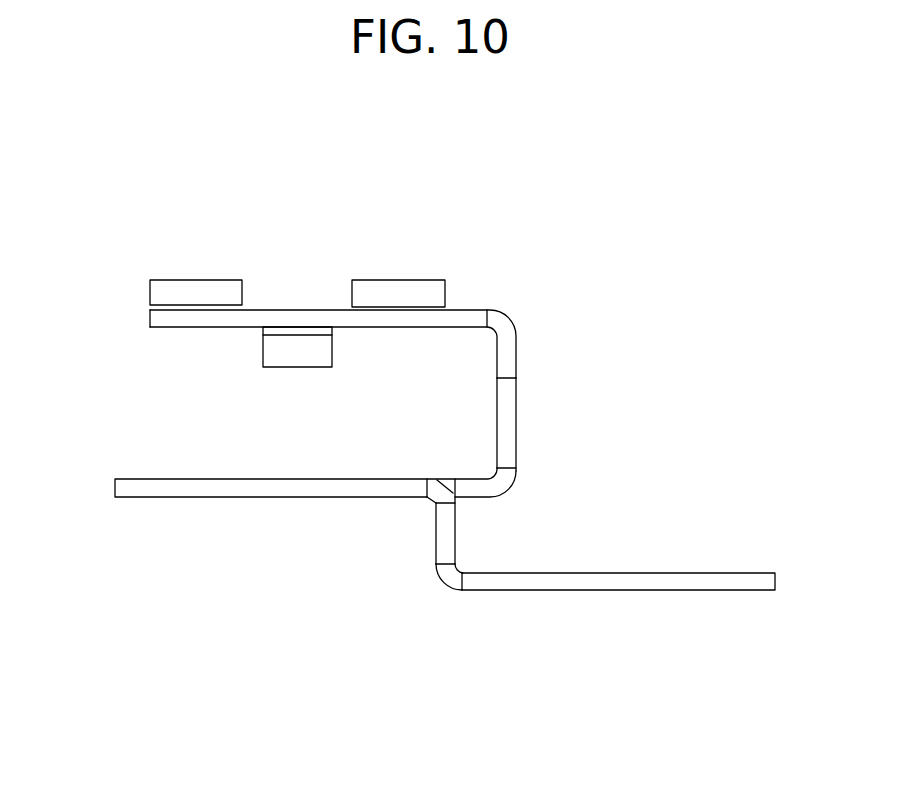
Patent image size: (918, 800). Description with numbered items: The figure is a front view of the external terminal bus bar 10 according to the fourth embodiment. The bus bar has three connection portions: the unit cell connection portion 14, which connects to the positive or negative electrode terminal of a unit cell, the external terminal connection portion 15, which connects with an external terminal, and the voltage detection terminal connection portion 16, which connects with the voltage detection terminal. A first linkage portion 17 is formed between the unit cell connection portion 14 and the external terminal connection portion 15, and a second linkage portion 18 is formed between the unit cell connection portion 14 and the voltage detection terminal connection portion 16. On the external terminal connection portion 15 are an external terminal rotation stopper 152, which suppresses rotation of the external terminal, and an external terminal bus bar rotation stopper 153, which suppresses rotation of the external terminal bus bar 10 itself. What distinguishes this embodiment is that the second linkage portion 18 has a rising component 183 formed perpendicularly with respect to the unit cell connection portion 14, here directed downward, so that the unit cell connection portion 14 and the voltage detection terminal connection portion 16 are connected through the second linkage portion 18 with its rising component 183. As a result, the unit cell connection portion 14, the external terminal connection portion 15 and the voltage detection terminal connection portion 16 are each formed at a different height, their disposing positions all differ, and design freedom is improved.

The external terminal bus bar 10 is at (120, 236).
The unit cell connection portion 14 is at (200, 492).
The external terminal connection portion 15 is at (468, 309).
The voltage detection terminal connection portion 16 is at (718, 583).
The first linkage portion 17 is at (516, 398).
The second linkage portion 18 is at (497, 583).
The external terminal rotation stopper 152 is at (215, 293).
The external terminal bus bar rotation stopper 153 is at (288, 360).
The rising component 183 is at (435, 537).